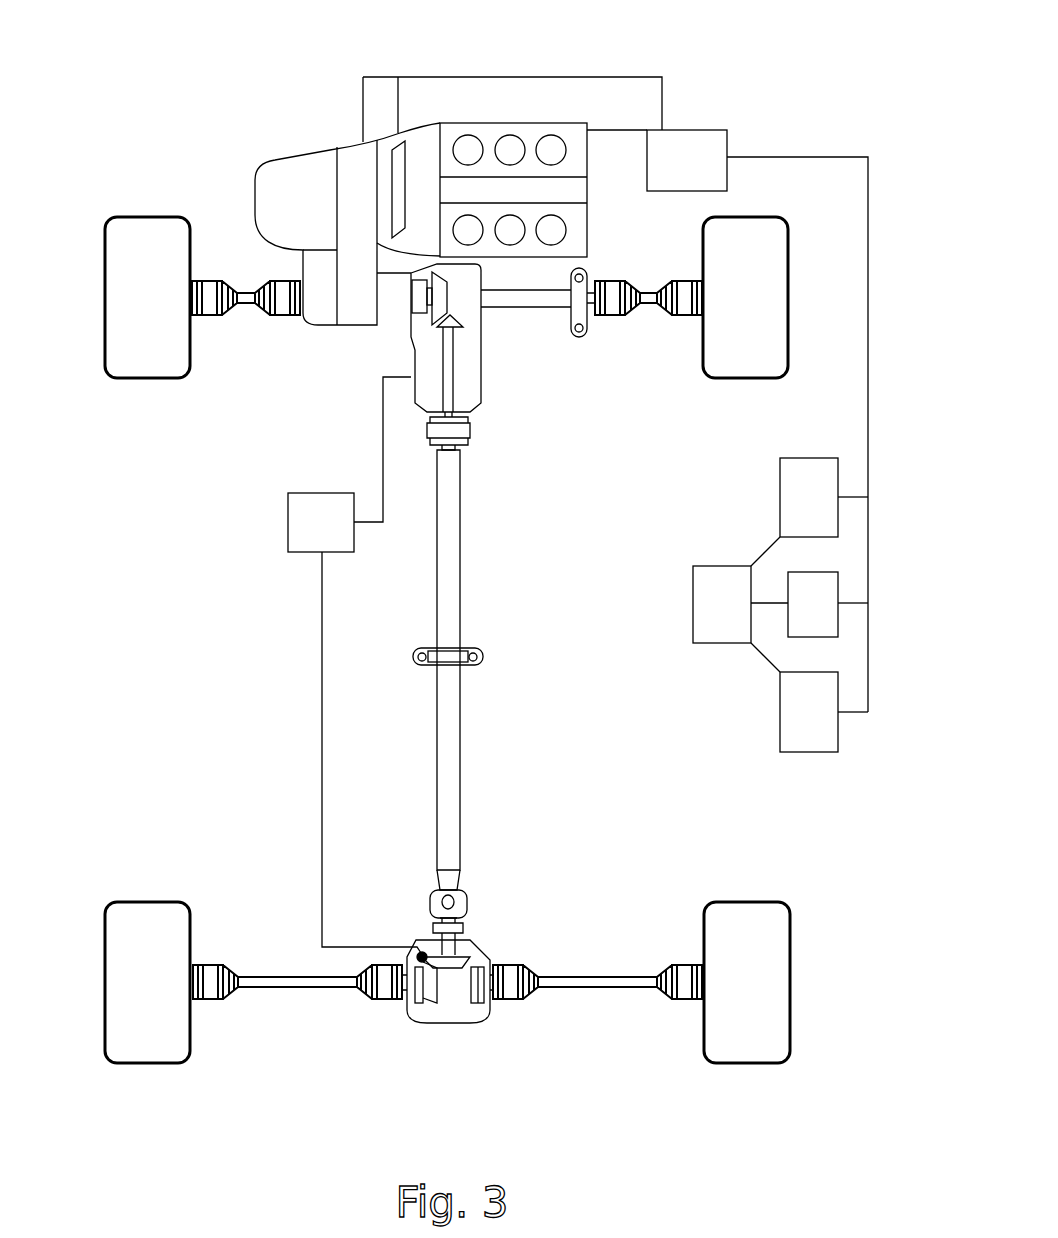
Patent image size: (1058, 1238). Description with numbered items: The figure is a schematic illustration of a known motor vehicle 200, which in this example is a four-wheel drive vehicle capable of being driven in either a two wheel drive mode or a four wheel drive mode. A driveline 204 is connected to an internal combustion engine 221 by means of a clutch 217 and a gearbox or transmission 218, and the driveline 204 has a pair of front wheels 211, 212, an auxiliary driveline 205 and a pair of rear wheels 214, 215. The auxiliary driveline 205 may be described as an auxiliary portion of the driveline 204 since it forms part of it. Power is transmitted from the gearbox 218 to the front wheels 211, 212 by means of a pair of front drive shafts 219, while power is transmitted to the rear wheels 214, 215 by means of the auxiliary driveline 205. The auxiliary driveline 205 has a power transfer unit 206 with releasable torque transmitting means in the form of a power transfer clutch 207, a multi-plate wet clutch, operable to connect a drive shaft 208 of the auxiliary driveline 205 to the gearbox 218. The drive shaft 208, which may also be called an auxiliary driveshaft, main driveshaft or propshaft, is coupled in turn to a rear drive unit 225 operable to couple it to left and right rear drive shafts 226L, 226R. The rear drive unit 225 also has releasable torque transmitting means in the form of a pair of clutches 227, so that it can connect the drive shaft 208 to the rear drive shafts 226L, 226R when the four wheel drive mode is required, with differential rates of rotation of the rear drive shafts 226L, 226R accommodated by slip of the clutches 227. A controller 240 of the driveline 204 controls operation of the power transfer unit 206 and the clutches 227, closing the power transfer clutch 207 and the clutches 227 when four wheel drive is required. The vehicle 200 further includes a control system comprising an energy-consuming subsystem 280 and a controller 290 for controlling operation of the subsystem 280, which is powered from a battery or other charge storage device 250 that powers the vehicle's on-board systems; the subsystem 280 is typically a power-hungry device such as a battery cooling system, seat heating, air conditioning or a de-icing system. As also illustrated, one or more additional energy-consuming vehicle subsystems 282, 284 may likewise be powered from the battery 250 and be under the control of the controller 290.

The motor vehicle 200 is at (786, 86).
The driveline 204 is at (518, 762).
The auxiliary driveline 205 is at (497, 488).
The power transfer unit 206 is at (480, 372).
The power transfer clutch 207 is at (420, 297).
The drive shaft 208 is at (455, 592).
The front wheel 211 is at (137, 235).
The front wheel 212 is at (753, 237).
The rear wheel 214 is at (137, 1048).
The rear wheel 215 is at (753, 1045).
The clutch 217 is at (423, 146).
The gearbox 218 is at (360, 167).
The front drive shafts 219 is at (247, 300).
The internal combustion engine 221 is at (580, 228).
The rear drive unit 225 is at (480, 957).
The left rear drive shaft 226L is at (311, 988).
The right rear drive shaft 226R is at (593, 982).
The clutches 227 is at (423, 995).
The controller 240 is at (302, 518).
The battery 250 is at (713, 145).
The energy-consuming subsystem 280 is at (802, 577).
The additional energy-consuming vehicle subsystem 282 is at (813, 467).
The additional energy-consuming vehicle subsystem 284 is at (813, 742).
The controller 290 is at (722, 633).